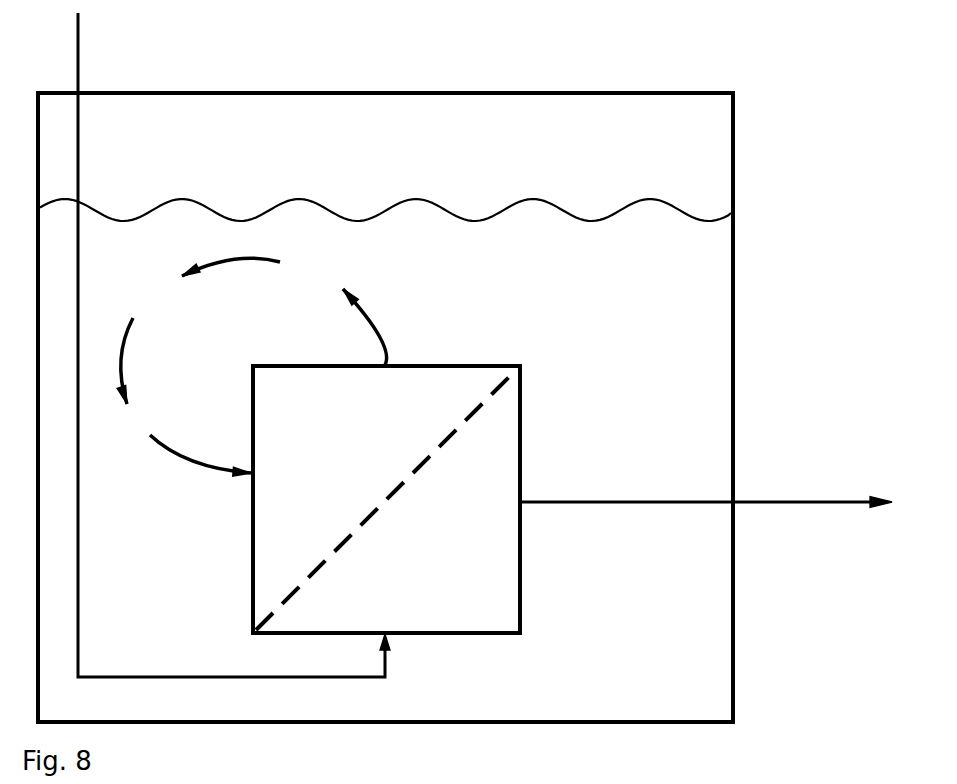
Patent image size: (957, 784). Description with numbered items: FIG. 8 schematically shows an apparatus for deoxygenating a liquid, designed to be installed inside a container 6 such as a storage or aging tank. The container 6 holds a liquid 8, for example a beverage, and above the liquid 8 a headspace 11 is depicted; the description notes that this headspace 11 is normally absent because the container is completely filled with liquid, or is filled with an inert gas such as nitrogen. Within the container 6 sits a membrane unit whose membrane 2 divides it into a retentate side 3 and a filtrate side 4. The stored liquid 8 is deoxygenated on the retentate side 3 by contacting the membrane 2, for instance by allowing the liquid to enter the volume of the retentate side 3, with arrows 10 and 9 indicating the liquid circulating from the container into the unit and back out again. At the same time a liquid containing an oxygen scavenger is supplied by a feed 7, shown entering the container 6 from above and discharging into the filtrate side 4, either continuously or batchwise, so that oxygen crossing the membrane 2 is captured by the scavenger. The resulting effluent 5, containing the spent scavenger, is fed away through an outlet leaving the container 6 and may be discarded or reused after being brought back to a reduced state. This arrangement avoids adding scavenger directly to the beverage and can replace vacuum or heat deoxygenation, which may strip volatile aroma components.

The membrane 2 is at (404, 478).
The retentate side of the membrane 3 is at (308, 432).
The filtrate side of the membrane 4 is at (483, 612).
The effluent 5 is at (812, 498).
The container 6 is at (737, 348).
The feed 7 is at (82, 38).
The liquid 8 is at (628, 331).
The outflow arrow 9 is at (378, 330).
The circulation flow 10 is at (180, 458).
The headspace 11 is at (404, 151).